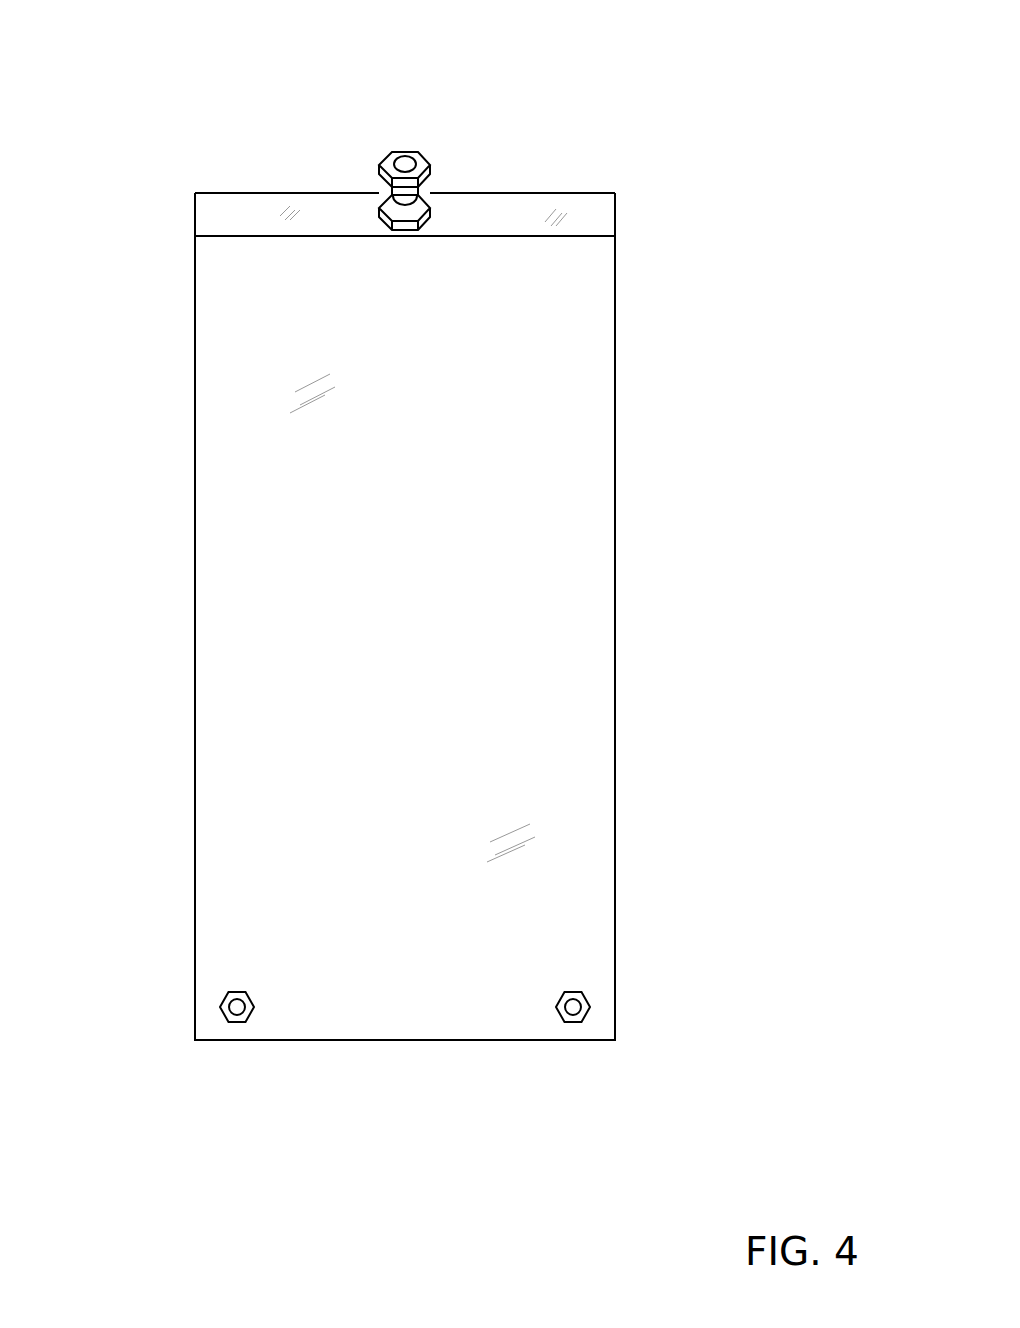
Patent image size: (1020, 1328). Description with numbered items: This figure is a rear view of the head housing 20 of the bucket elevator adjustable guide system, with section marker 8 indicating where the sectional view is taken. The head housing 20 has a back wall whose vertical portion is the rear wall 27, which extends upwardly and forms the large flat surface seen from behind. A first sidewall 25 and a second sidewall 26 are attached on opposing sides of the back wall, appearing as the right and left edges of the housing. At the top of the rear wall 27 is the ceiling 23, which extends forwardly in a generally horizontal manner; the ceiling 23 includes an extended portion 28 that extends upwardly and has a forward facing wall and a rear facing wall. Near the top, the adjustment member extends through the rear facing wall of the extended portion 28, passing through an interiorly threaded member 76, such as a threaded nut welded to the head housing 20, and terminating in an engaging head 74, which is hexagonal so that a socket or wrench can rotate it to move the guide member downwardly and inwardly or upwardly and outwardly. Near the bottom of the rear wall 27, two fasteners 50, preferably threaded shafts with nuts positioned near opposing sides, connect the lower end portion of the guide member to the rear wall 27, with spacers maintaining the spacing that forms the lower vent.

The head housing 20 is at (615, 558).
The ceiling 23 is at (240, 236).
The first sidewall 25 is at (615, 756).
The second sidewall 26 is at (195, 522).
The rear wall 27 is at (282, 680).
The extended portion 28 is at (510, 212).
The fasteners 50 is at (237, 1007).
The engaging head 74 is at (423, 157).
The interiorly threaded member 76 is at (430, 205).
The section line 8 is at (405, 117).